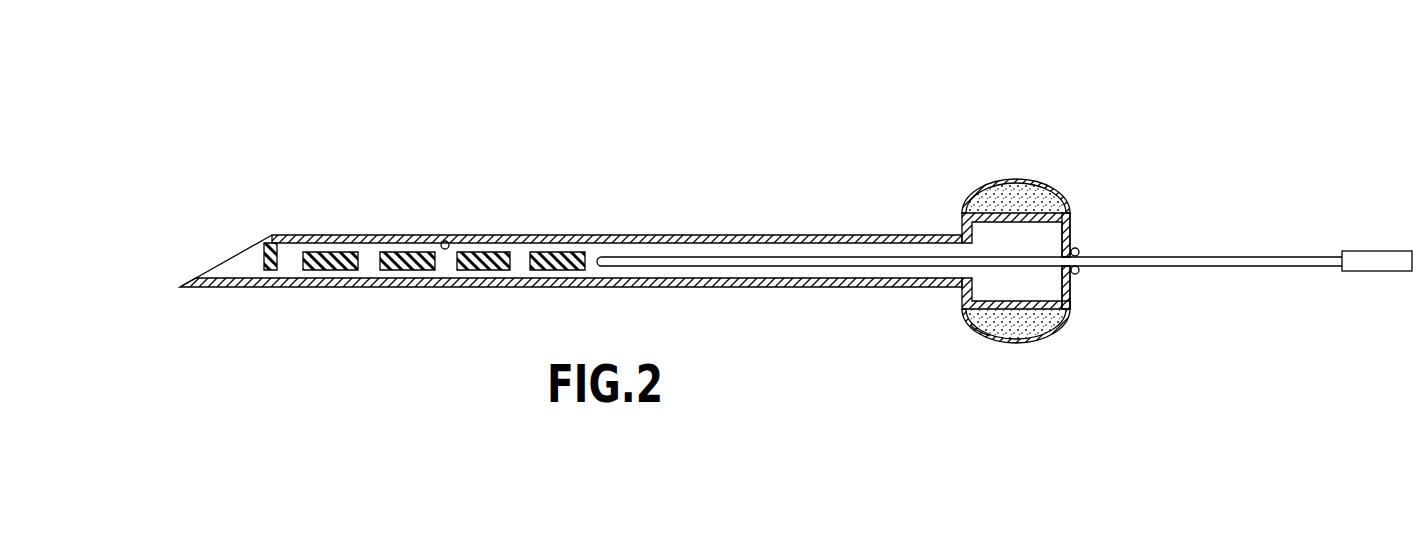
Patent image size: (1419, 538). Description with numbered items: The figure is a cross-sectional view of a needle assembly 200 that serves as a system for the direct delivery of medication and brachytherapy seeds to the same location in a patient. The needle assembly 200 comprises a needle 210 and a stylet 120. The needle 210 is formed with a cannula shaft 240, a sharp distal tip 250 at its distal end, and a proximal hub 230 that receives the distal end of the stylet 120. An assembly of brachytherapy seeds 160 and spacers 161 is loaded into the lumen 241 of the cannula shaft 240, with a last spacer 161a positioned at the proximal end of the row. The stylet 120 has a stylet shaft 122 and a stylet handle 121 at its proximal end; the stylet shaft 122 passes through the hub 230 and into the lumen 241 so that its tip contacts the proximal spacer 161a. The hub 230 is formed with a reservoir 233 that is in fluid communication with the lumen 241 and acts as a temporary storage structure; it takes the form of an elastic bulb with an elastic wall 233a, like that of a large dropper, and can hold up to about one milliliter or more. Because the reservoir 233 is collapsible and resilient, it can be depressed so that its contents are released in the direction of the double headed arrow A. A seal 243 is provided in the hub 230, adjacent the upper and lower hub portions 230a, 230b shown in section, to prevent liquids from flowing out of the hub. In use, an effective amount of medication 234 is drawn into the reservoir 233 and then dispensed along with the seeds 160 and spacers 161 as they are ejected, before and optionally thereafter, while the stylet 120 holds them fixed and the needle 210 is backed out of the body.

The needle assembly 200 is at (737, 100).
The cannula shaft 240 is at (573, 227).
The needle 210 is at (835, 235).
The distal tip 250 is at (222, 262).
The brachytherapy seeds 160 is at (327, 252).
The spacers 161 is at (403, 252).
The last spacer 161a is at (548, 270).
The lumen 241 is at (448, 241).
The medication 234 is at (987, 237).
The proximal hub 230 is at (1070, 224).
The aperture in end wall 230a is at (1079, 250).
The seal 243 is at (1079, 273).
The end wall lower portion 230b is at (1072, 305).
The reservoir 233 is at (1004, 176).
The elastic wall 233a is at (1035, 185).
The double headed arrow A is at (983, 327).
The stylet 120 is at (1223, 277).
The stylet shaft 122 is at (1158, 255).
The stylet handle 121 is at (1377, 272).